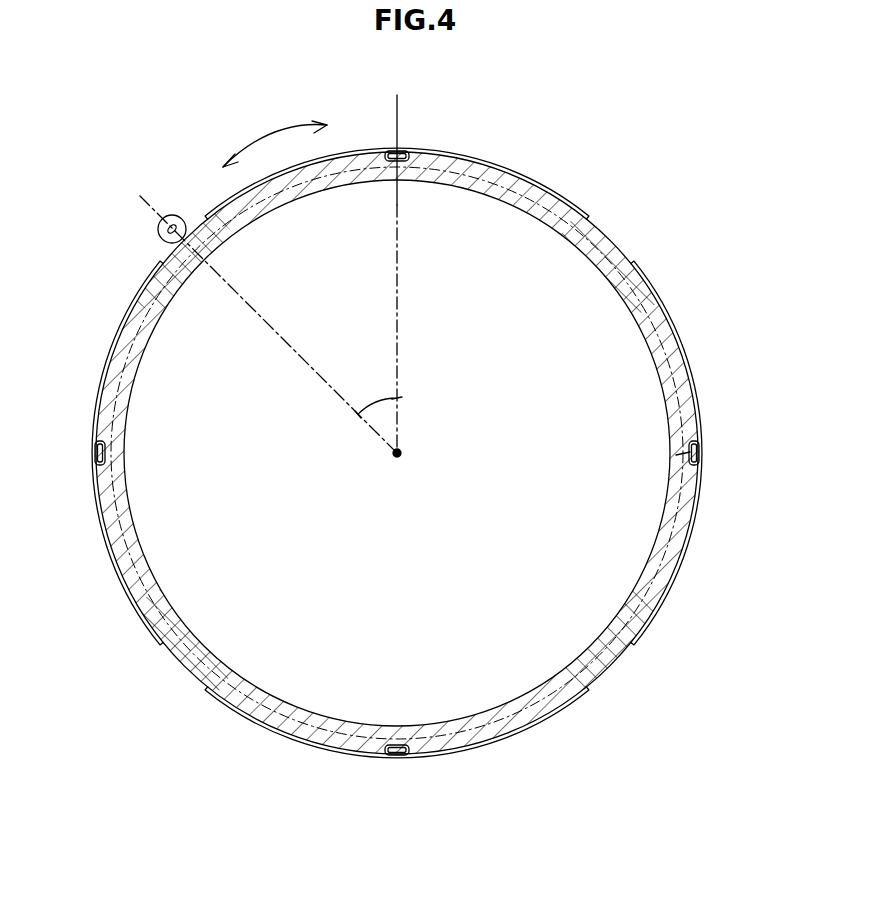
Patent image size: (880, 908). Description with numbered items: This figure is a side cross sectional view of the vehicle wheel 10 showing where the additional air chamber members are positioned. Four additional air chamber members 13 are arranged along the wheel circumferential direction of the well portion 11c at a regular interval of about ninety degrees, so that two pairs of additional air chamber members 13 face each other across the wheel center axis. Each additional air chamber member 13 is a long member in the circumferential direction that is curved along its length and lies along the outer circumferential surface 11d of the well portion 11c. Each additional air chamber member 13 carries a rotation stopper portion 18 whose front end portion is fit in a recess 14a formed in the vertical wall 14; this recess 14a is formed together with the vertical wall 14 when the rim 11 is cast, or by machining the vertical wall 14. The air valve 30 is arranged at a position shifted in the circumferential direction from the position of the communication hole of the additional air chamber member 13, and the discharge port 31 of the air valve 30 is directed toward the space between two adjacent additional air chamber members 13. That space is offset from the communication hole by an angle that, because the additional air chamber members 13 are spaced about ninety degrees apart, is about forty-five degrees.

The vehicle wheel 10 is at (688, 326).
The rim 11 is at (390, 454).
The well portion 11c is at (616, 230).
The outer circumferential surface 11d is at (470, 190).
The additional air chamber member 13 is at (505, 163).
The vertical wall 14 is at (556, 206).
The recess 14a is at (674, 461).
The rotation stopper portion 18 is at (405, 153).
The air valve 30 is at (180, 214).
The discharge port 31 is at (160, 232).